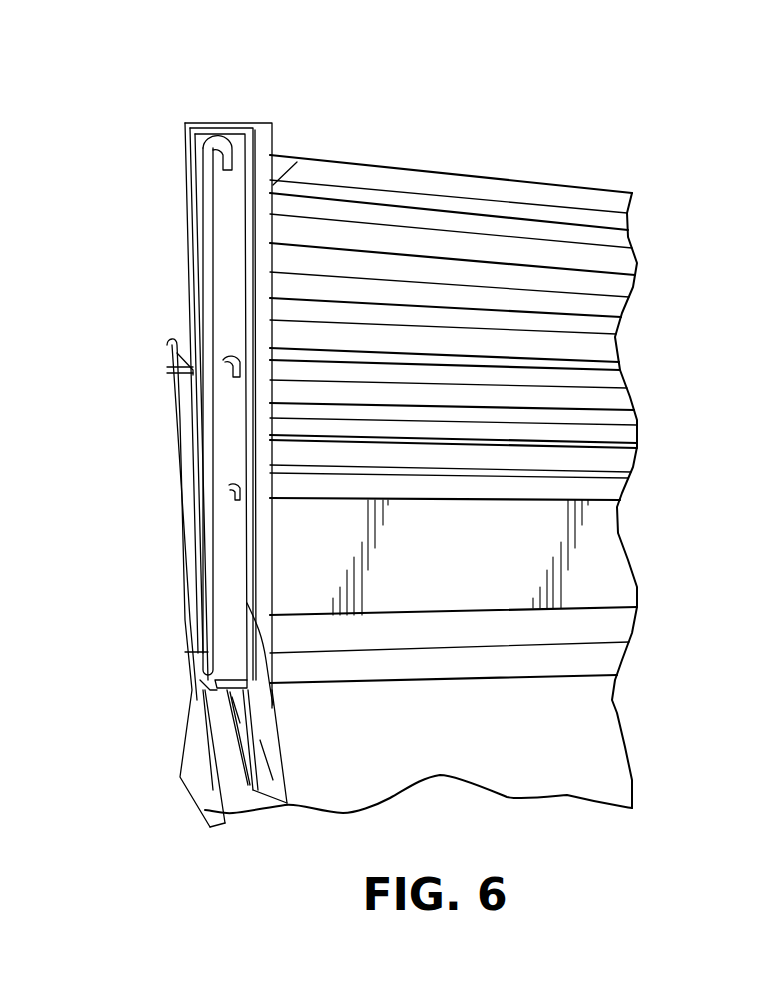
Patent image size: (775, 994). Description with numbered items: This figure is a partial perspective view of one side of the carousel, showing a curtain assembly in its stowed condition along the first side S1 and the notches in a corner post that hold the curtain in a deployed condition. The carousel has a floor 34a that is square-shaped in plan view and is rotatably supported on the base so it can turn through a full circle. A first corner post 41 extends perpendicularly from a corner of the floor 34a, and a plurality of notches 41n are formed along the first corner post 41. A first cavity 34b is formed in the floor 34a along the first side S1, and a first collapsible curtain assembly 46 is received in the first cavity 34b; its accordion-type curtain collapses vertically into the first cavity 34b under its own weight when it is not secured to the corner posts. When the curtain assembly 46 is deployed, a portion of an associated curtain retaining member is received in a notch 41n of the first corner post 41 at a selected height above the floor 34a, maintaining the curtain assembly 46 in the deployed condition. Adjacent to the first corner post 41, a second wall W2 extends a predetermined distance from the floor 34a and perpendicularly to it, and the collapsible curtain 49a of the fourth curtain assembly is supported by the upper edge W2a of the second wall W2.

The first corner post 41 is at (220, 126).
The notches 41n is at (226, 357).
The collapsible curtain 49a is at (412, 210).
The floor 34a is at (590, 718).
The first cavity 34b is at (263, 785).
The first collapsible curtain assembly 46 is at (257, 746).
The second wall W2 is at (297, 550).
The upper edge of the second wall W2a is at (557, 468).
The first side S1 is at (327, 710).